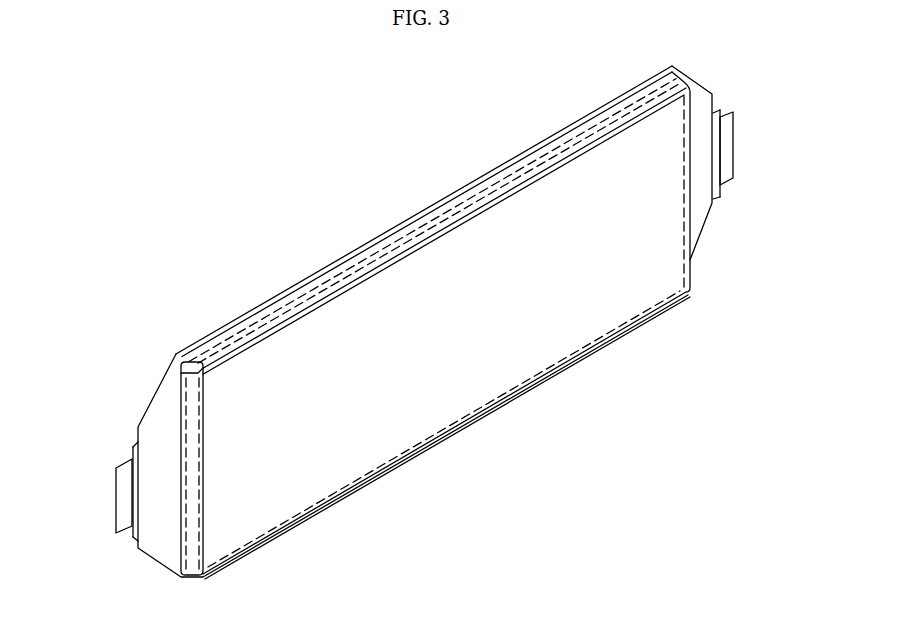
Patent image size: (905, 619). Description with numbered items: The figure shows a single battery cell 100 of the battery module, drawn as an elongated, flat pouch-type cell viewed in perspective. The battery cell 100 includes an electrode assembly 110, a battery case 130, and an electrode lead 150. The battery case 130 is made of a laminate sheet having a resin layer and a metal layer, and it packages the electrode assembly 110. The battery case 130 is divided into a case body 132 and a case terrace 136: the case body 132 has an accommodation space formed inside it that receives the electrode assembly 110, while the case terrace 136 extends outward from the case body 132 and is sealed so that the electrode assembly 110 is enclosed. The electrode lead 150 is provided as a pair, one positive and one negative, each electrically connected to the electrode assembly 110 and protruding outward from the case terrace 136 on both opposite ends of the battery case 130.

The battery cell 100 is at (335, 178).
The electrode assembly 110 is at (348, 278).
The battery case 130 is at (458, 447).
The case body 132 is at (333, 470).
The case terrace 136 is at (703, 219).
The electrode lead 150 is at (725, 147).